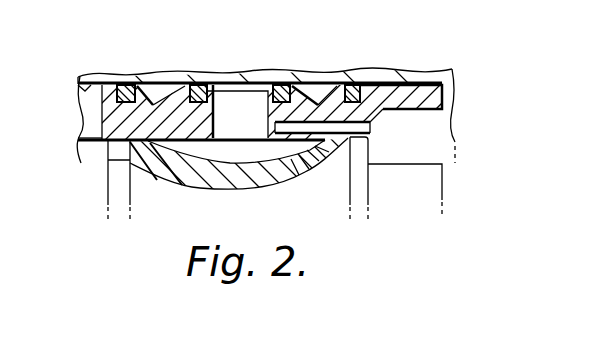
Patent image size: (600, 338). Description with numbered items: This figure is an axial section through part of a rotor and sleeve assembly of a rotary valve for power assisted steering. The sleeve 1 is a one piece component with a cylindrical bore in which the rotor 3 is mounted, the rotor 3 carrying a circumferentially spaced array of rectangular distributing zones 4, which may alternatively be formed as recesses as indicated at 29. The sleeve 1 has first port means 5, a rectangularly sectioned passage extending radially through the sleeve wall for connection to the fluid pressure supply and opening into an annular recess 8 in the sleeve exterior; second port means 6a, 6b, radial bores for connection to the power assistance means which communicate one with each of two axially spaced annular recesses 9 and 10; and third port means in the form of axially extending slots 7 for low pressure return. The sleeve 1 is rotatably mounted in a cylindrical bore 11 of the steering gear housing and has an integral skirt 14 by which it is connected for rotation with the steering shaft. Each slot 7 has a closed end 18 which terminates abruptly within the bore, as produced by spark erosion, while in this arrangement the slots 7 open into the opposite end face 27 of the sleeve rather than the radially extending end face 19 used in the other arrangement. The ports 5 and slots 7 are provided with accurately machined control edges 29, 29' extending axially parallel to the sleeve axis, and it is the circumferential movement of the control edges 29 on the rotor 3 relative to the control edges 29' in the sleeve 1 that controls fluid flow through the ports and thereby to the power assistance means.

The sleeve 1 is at (112, 118).
The rotor 3 is at (167, 173).
The distributing zones 4 is at (247, 153).
The first port means 5 is at (254, 84).
The second port means 6a is at (312, 95).
The second port means 6b is at (167, 97).
The axially extending slots 7 is at (370, 134).
The annular recess 8 is at (215, 83).
The annular recess 9 is at (333, 83).
The annular recess 10 is at (140, 87).
The cylindrical bore 11 is at (82, 76).
The integral skirt 14 is at (428, 90).
The closed end 18 is at (303, 178).
The end face 19 is at (85, 141).
The opposite end face 27 is at (390, 117).
The control edges 29 is at (262, 180).
The control edges 29' is at (382, 178).